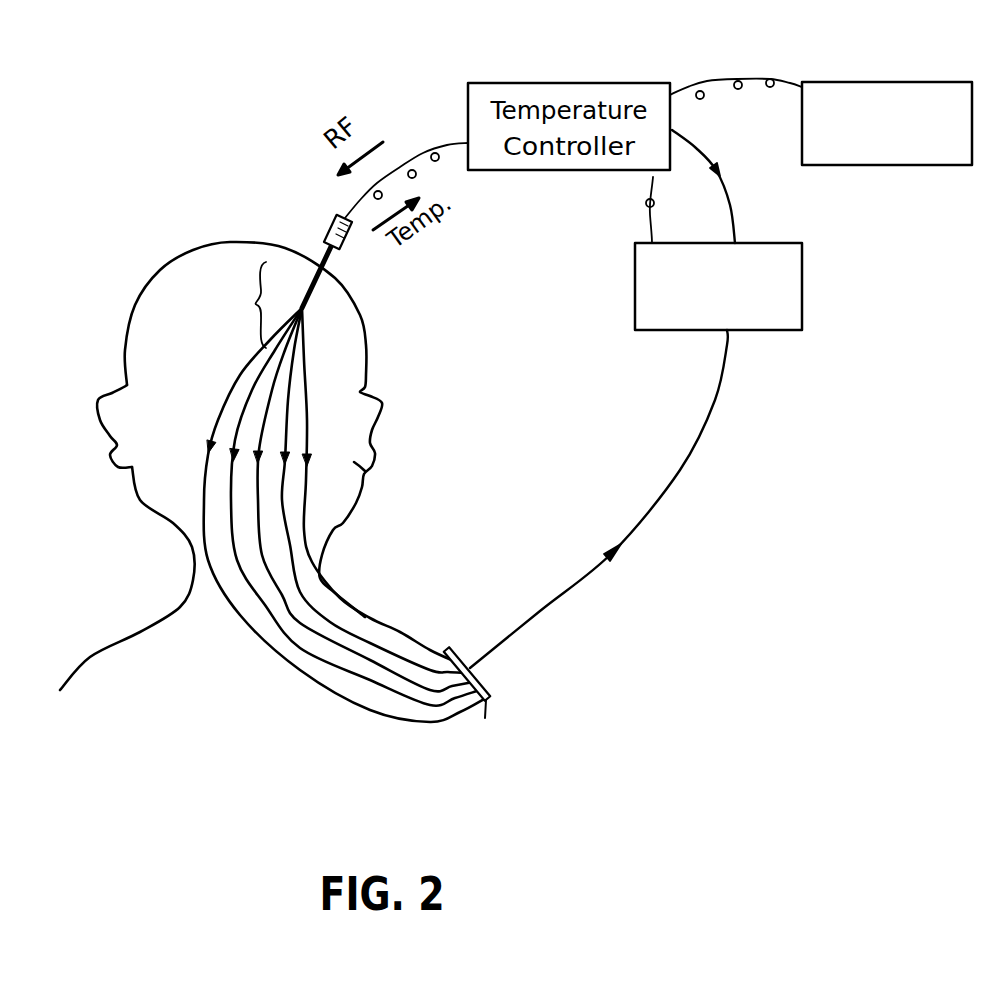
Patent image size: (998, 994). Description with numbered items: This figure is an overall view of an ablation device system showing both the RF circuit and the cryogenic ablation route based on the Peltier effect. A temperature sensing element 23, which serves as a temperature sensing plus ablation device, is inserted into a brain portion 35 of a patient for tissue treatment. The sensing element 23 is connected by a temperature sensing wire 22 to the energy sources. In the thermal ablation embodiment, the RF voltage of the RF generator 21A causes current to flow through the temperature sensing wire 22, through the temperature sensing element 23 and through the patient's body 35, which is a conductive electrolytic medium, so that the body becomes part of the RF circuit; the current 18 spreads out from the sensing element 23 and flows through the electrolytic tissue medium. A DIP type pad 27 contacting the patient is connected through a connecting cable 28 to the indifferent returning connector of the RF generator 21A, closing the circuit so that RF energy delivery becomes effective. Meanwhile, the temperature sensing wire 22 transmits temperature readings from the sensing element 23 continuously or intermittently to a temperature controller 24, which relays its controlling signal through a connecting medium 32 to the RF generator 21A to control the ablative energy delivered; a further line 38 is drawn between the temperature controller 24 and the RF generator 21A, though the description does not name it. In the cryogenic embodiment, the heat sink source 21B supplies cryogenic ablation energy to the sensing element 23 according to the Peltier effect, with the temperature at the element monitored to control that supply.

The current 18 is at (317, 390).
The RF generator 21A is at (797, 260).
The heat sink source 21B is at (907, 167).
The temperature sensing wire 22 is at (420, 152).
The temperature sensing element 23 is at (313, 293).
The temperature controller 24 is at (663, 92).
The DIP type pad 27 is at (497, 688).
The connecting cable 28 is at (660, 512).
The connecting medium 32 is at (627, 200).
The brain portion 35 is at (238, 305).
The control line from temperature controller to RF generator 38 is at (731, 183).